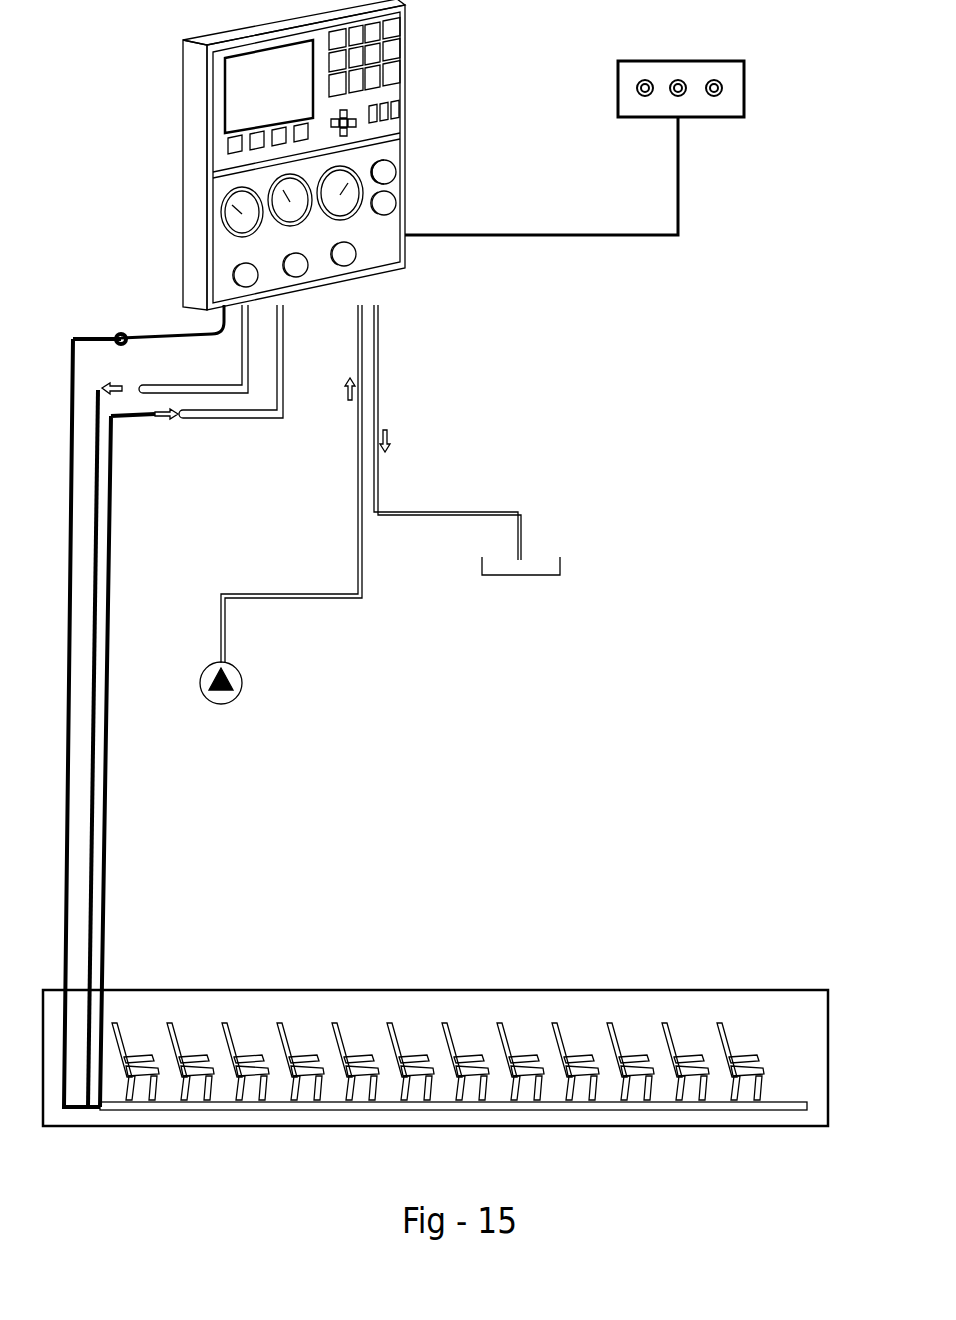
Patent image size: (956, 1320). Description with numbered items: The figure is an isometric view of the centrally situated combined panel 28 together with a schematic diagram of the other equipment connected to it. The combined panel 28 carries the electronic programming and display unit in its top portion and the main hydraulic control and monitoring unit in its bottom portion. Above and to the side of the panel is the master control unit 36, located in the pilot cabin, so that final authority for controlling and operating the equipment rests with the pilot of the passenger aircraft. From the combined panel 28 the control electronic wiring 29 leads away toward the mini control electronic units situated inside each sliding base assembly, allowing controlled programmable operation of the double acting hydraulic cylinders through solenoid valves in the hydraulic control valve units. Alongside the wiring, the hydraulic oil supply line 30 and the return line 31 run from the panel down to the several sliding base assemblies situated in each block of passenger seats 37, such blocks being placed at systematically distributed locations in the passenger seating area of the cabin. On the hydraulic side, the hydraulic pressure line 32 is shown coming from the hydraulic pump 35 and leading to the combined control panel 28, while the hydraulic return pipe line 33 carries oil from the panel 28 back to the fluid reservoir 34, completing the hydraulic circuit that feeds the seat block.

The combined panel 28 is at (195, 132).
The control electronic wiring 29 is at (187, 332).
The hydraulic oil supply line 30 is at (143, 385).
The hydraulic oil return line 31 is at (252, 425).
The hydraulic pressure line 32 is at (358, 497).
The hydraulic return pipe line 33 is at (375, 480).
The fluid reservoir 34 is at (543, 563).
The hydraulic pump 35 is at (243, 690).
The master control unit 36 is at (744, 108).
The block of passenger seats 37 is at (463, 988).